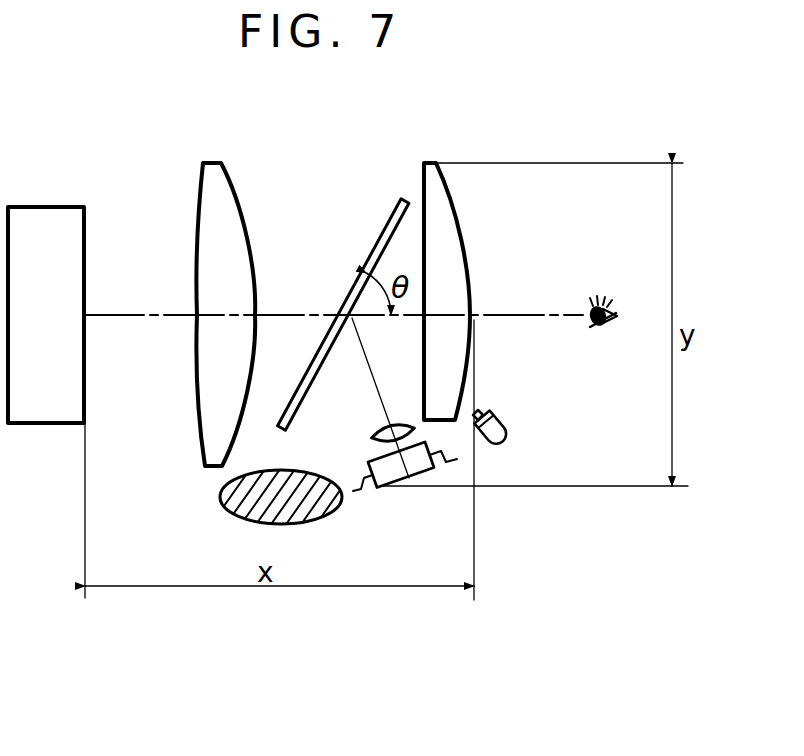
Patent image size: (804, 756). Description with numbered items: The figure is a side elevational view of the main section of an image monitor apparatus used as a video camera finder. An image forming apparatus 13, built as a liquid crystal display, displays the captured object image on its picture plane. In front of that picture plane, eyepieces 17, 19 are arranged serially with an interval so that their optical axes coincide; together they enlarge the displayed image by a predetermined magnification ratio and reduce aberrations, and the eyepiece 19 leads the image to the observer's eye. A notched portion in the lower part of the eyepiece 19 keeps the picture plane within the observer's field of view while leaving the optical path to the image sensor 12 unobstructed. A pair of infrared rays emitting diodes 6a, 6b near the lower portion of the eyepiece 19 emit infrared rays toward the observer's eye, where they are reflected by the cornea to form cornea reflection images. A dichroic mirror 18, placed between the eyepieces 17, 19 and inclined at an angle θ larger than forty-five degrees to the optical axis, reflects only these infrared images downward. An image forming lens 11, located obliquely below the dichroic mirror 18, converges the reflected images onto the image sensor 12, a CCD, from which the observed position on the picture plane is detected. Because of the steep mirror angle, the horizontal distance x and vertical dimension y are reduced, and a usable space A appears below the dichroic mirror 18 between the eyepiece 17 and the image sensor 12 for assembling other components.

The image forming apparatus 13 is at (40, 207).
The eyepiece 17 is at (228, 188).
The dichroic mirror 18 is at (380, 235).
The eyepiece 19 is at (455, 200).
The image forming lens 11 is at (374, 439).
The image sensor 12 is at (432, 471).
The space A is at (232, 518).
The infrared rays emitting diode 6a is at (500, 433).
The infrared rays emitting diode 6b is at (485, 413).